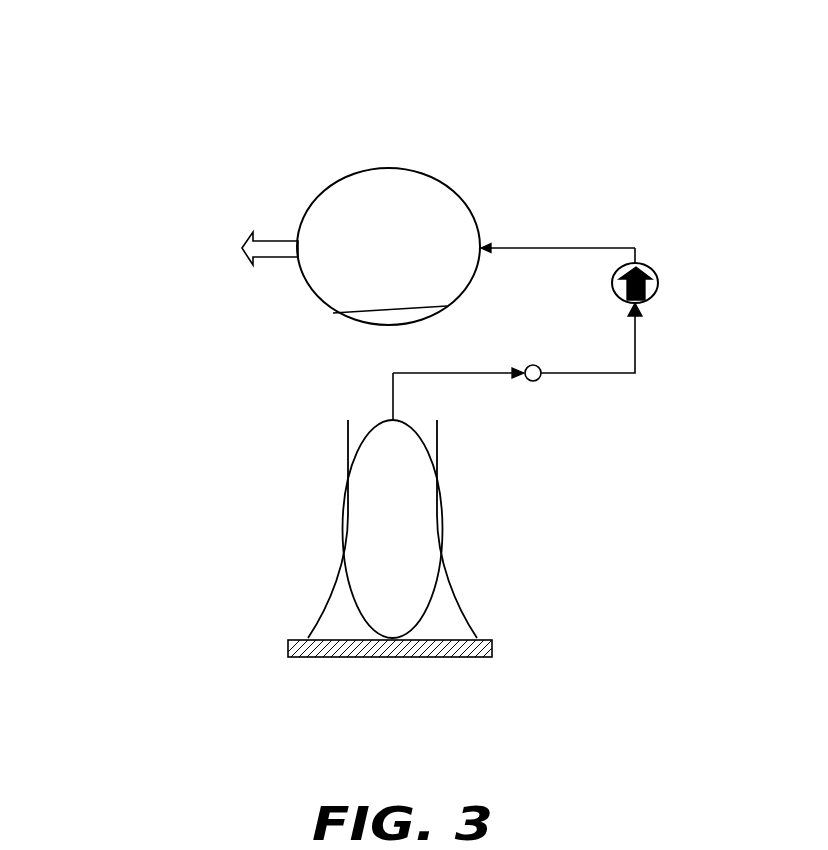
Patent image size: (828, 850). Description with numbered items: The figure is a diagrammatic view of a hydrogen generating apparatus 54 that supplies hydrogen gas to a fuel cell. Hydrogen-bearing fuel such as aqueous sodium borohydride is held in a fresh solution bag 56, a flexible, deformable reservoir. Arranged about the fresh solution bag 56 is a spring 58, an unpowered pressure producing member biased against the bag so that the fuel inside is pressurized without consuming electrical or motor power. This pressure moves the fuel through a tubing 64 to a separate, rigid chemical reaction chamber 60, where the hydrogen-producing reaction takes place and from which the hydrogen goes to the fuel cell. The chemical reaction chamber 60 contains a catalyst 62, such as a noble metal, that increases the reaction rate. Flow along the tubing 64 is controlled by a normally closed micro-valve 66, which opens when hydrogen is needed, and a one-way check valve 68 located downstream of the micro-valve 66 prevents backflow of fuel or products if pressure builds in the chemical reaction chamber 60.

The hydrogen generating apparatus 54 is at (674, 89).
The fresh solution bag 56 is at (428, 610).
The spring 58 is at (438, 448).
The chemical reaction chamber 60 is at (450, 186).
The catalyst 62 is at (365, 317).
The tubing 64 is at (635, 365).
The micro-valve 66 is at (538, 380).
The check valve 68 is at (660, 282).